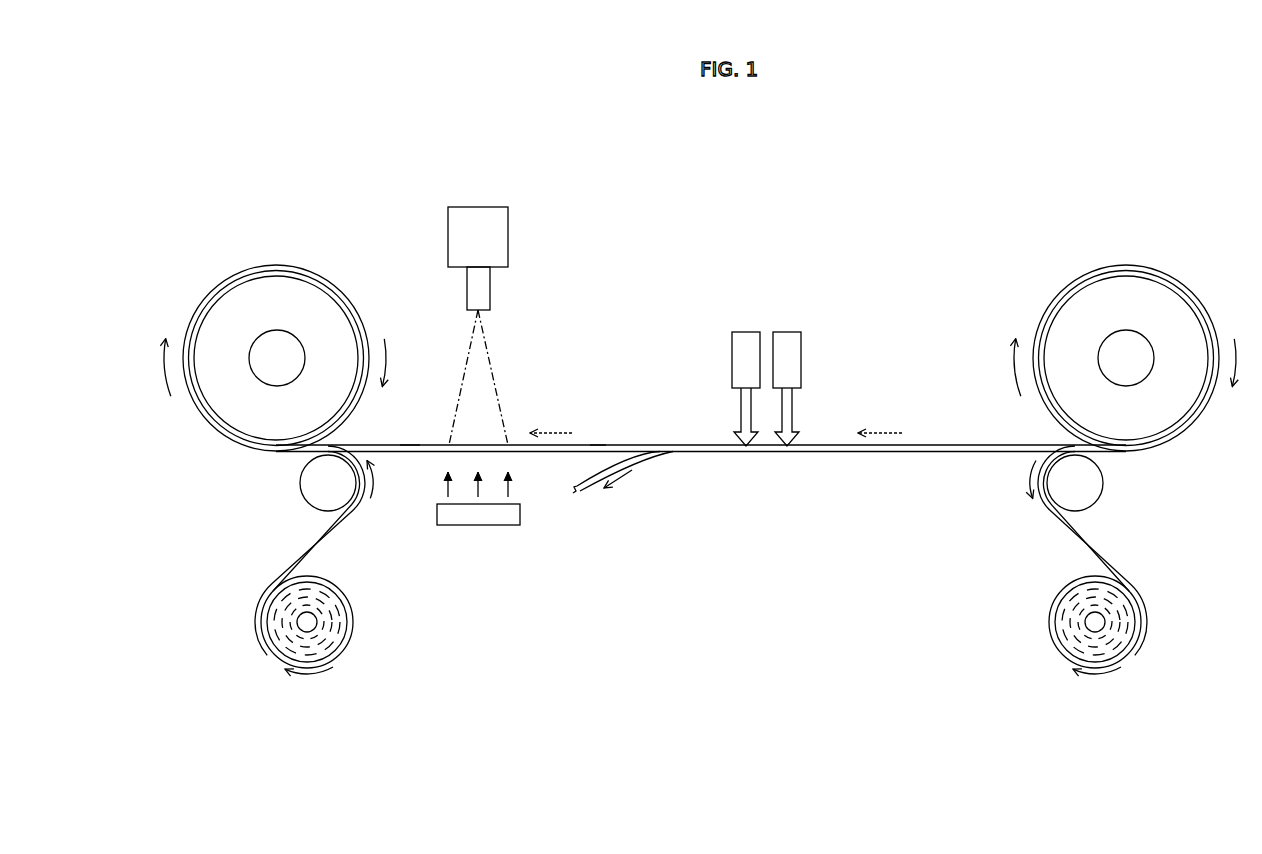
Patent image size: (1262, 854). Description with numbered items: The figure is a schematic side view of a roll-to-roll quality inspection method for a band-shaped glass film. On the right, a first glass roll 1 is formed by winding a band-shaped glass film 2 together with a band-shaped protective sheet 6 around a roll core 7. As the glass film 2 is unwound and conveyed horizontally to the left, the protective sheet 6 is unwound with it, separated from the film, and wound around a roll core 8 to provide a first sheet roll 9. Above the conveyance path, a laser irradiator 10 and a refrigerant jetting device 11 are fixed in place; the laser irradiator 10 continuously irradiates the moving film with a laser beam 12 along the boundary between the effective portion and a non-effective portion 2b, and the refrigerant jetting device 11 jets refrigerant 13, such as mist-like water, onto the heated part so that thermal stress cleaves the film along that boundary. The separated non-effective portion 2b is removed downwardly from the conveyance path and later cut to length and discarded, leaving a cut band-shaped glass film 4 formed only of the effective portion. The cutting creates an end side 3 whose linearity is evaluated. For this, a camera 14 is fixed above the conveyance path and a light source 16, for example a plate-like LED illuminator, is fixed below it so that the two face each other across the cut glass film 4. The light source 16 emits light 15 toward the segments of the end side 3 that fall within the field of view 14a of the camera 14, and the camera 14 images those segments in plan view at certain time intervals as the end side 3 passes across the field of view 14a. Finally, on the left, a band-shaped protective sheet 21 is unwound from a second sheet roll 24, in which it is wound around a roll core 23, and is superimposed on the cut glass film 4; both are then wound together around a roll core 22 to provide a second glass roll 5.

The first glass roll 1 is at (1170, 252).
The band-shaped glass film 2 is at (888, 457).
The non-effective portion 2b is at (580, 494).
The end side 3 is at (598, 445).
The cut band-shaped glass film 4 is at (410, 443).
The second glass roll 5 is at (232, 252).
The band-shaped protective sheet 6 is at (1093, 548).
The roll core 7 is at (1120, 352).
The roll core 8 is at (1097, 621).
The first sheet roll 9 is at (1043, 667).
The laser irradiator 10 is at (793, 332).
The refrigerant jetting device 11 is at (742, 332).
The laser beam 12 is at (800, 417).
The refrigerant 13 is at (732, 417).
The camera 14 is at (478, 207).
The field of view 14a is at (480, 434).
The light 15 is at (494, 485).
The light source 16 is at (478, 525).
The band-shaped protective sheet 21 is at (308, 548).
The roll core 22 is at (283, 348).
The roll core 23 is at (305, 622).
The second sheet roll 24 is at (357, 667).